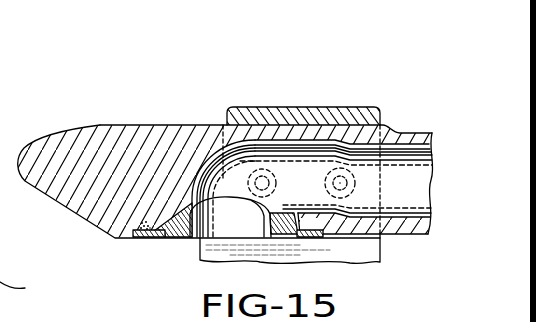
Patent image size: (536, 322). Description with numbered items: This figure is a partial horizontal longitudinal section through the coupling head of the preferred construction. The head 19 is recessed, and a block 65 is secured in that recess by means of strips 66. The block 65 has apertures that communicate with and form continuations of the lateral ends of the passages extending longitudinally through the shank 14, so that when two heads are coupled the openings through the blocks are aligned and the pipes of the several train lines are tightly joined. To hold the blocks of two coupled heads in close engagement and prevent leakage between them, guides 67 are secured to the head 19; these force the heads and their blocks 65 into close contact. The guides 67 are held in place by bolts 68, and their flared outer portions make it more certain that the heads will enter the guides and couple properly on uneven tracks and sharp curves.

The shank 14 is at (412, 138).
The head 19 is at (163, 130).
The block 65 is at (182, 240).
The strips 66 is at (147, 241).
The guides 67 is at (323, 115).
The bolts 68 is at (325, 186).